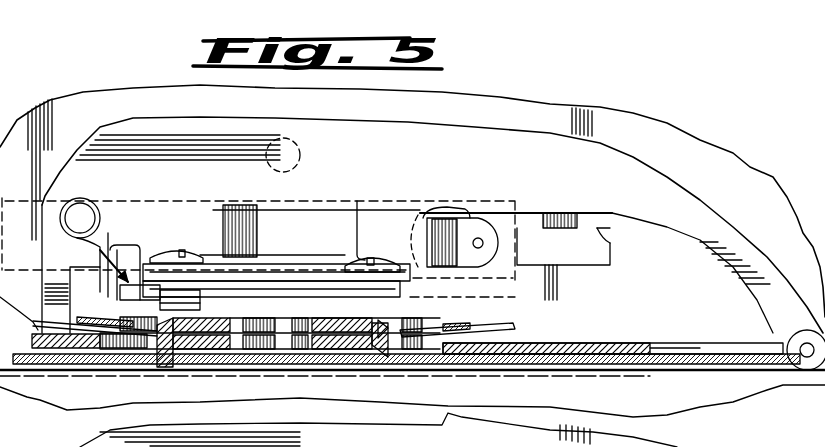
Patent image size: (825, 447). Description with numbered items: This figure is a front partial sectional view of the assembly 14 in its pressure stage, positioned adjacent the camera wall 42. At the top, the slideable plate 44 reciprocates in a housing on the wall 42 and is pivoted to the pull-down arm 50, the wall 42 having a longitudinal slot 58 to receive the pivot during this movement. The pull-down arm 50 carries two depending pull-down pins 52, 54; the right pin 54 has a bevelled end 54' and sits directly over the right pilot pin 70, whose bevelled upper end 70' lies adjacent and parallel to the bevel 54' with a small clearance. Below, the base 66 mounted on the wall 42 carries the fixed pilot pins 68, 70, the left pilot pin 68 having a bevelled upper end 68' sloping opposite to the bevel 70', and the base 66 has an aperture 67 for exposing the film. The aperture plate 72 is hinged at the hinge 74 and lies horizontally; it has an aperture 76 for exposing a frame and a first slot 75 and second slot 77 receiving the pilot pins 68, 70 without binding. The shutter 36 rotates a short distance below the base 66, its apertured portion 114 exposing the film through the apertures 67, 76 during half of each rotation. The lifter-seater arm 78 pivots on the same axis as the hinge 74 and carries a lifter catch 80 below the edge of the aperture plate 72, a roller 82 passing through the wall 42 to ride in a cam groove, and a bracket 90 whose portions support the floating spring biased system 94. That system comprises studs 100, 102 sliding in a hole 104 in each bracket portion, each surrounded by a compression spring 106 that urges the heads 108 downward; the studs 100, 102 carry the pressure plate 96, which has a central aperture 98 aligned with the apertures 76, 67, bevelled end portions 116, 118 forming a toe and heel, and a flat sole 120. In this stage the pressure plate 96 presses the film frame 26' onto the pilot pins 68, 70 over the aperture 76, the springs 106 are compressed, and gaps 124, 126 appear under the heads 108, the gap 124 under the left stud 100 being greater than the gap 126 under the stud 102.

The assembly 14 is at (412, 197).
The wall 42 is at (432, 205).
The lifter-seater arm 78 is at (483, 122).
The roller 82 is at (298, 156).
The gap 124 is at (115, 236).
The heads 108 is at (166, 241).
The stud 100 is at (190, 217).
The hole 104 is at (276, 229).
The stud 102 is at (372, 224).
The floating spring biased system 94 is at (422, 221).
The pull-down arm 50 is at (472, 227).
The slideable plate 44 is at (412, 237).
The slot 58 is at (610, 240).
The gap 126 is at (328, 268).
The compression spring 106 is at (271, 277).
The bracket 90 is at (64, 240).
The pull-down pin 52 is at (50, 269).
The bevelled upper end 68' is at (140, 302).
The pressure plate 96 is at (223, 307).
The frame of film 26' is at (273, 307).
The central aperture 98 is at (339, 306).
The bevelled end 54' is at (407, 316).
The bevelled upper end 70' is at (457, 314).
The pull-down pin 54 is at (465, 291).
The first slot 75 is at (94, 361).
The bevelled end portion 116 is at (128, 361).
The pilot pin 68 is at (171, 361).
The sole 120 is at (207, 361).
The aperture 67 is at (308, 368).
The shutter aperture 114 is at (302, 400).
The aperture 76 is at (342, 361).
The pilot pin 70 is at (352, 370).
The bevelled end portion 118 is at (424, 361).
The second slot 77 is at (431, 364).
The lifter catch 80 is at (412, 372).
The shutter 36 is at (550, 385).
The base 66 is at (406, 380).
The aperture plate 72 is at (725, 355).
The hinge 74 is at (806, 380).